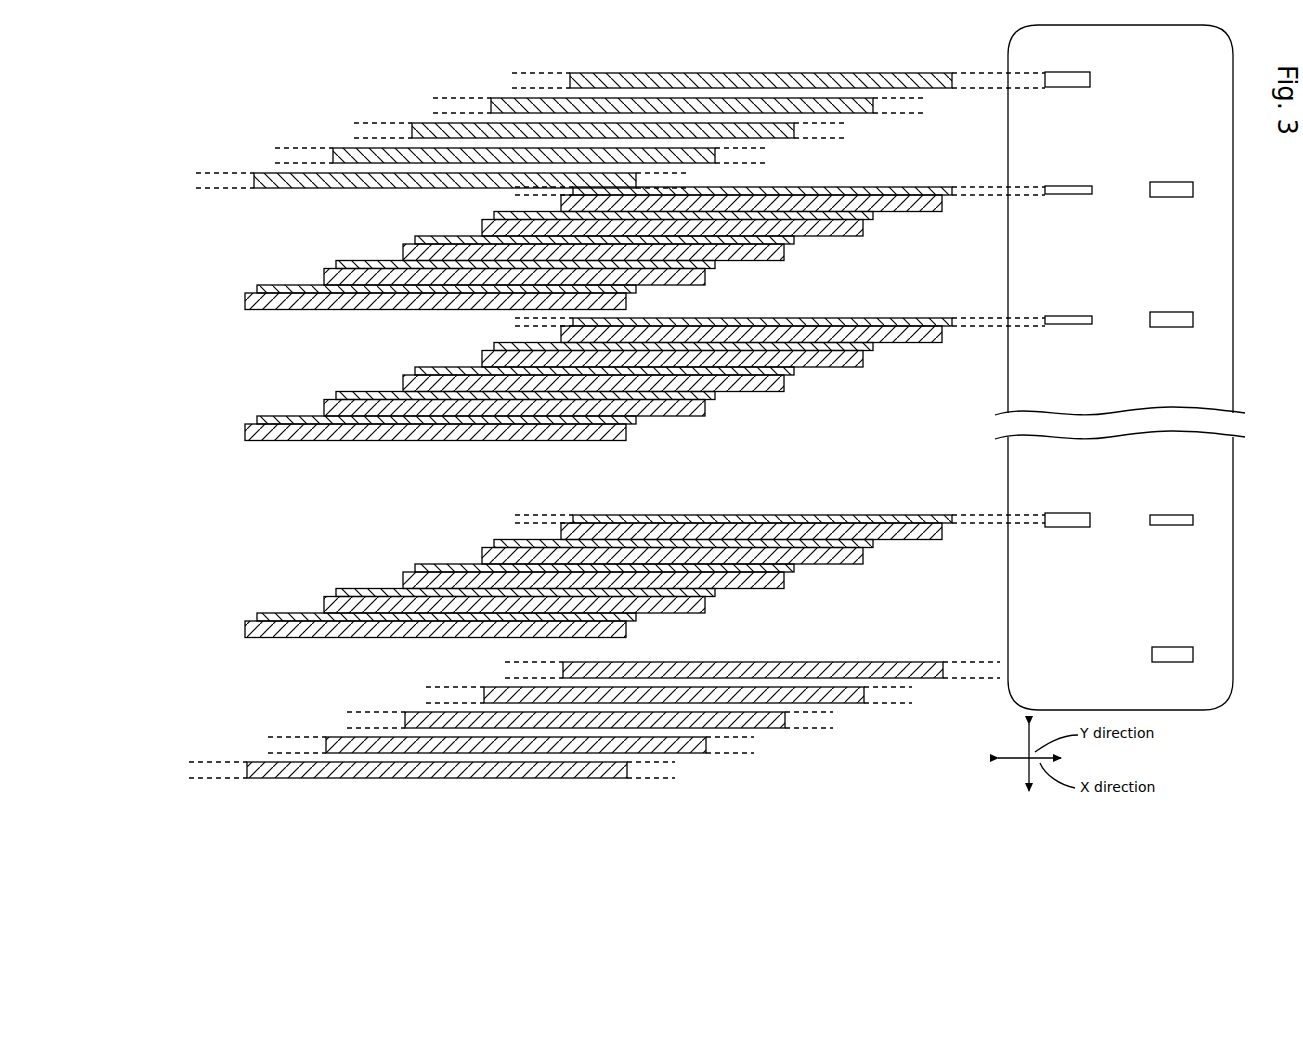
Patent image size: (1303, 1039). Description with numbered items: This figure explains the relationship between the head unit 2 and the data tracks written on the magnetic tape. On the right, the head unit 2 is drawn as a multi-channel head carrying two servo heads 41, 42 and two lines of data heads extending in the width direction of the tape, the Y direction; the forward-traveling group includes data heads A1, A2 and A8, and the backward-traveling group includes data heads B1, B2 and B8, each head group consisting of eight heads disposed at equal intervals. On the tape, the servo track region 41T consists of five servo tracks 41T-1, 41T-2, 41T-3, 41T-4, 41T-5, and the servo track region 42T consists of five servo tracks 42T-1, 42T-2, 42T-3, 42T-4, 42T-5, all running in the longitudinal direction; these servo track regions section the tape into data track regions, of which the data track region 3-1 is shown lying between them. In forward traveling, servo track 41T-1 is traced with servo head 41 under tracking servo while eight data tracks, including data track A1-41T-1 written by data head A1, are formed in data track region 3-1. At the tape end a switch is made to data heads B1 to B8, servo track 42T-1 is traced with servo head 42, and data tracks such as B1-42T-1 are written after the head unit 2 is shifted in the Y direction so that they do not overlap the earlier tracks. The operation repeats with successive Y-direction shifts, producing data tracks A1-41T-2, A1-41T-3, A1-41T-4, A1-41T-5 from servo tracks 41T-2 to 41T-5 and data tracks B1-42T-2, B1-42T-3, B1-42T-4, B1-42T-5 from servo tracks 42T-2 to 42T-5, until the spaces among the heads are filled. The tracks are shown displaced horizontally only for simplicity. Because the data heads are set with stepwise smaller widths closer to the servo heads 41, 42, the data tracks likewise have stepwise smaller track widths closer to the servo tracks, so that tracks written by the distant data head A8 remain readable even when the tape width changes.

The servo track region 41T is at (806, 54).
The servo track 41T-1 is at (643, 73).
The servo track 41T-2 is at (525, 98).
The servo track 41T-3 is at (448, 122).
The servo track 41T-4 is at (385, 147).
The servo track 41T-5 is at (310, 173).
The servo track region 42T is at (376, 691).
The servo track 42T-1 is at (915, 677).
The servo track 42T-2 is at (850, 695).
The servo track 42T-3 is at (785, 722).
The servo track 42T-4 is at (710, 746).
The servo track 42T-5 is at (630, 771).
The data track A1-41T-1 is at (835, 186).
The data track A1-41T-2 is at (868, 220).
The data track A1-41T-3 is at (787, 243).
The data track A1-41T-4 is at (365, 268).
The data track A1-41T-5 is at (318, 287).
The data track B1-42T-1 is at (877, 198).
The data track B1-42T-2 is at (835, 240).
The data track B1-42T-3 is at (757, 261).
The data track B1-42T-4 is at (322, 277).
The data track B1-42T-5 is at (300, 311).
The data track region 3-1 is at (180, 186).
The head unit 2 is at (1170, 740).
The servo head 41 is at (1073, 72).
The servo head 42 is at (1177, 647).
The data head A1 is at (1070, 186).
The data head B1 is at (1173, 182).
The data head A2 is at (1072, 316).
The data head B2 is at (1175, 312).
The data head A8 is at (1073, 527).
The data head B8 is at (1175, 525).